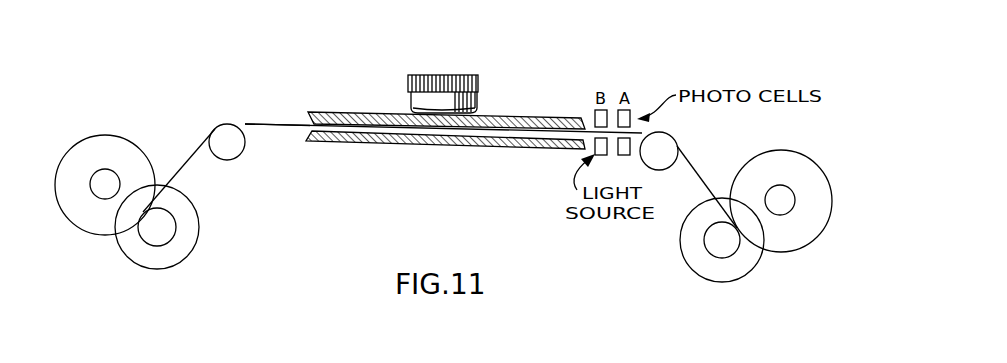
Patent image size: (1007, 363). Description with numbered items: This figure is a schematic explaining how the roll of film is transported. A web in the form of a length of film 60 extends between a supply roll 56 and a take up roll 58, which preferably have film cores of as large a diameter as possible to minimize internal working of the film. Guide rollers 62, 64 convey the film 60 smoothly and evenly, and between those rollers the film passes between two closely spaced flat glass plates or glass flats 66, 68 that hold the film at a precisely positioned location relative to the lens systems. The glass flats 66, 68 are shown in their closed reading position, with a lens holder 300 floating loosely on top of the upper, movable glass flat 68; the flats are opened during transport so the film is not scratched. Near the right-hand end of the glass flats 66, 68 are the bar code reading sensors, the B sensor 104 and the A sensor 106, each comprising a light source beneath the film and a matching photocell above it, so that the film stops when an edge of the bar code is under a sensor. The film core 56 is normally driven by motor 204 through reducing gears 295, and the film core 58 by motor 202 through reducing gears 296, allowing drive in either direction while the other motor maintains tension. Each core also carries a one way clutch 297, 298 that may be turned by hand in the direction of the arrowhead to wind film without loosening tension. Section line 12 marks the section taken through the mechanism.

The section line 12- 12 is at (315, 53).
The supply roll 56 is at (95, 221).
The take up roll 58 is at (798, 232).
The film 60 is at (290, 125).
The guide roller 62 is at (222, 126).
The guide roller 64 is at (673, 147).
The glass flat 66 is at (418, 146).
The glass flat 68 is at (507, 116).
The B sensor 104 is at (593, 114).
The A sensor 106 is at (632, 118).
The motor 202 is at (716, 286).
The motor 204 is at (195, 250).
The reducing gears 295 is at (155, 247).
The reducing gears 296 is at (703, 250).
The one way clutch 297 is at (102, 167).
The one way clutch 298 is at (796, 192).
The lens holder 300 is at (478, 80).